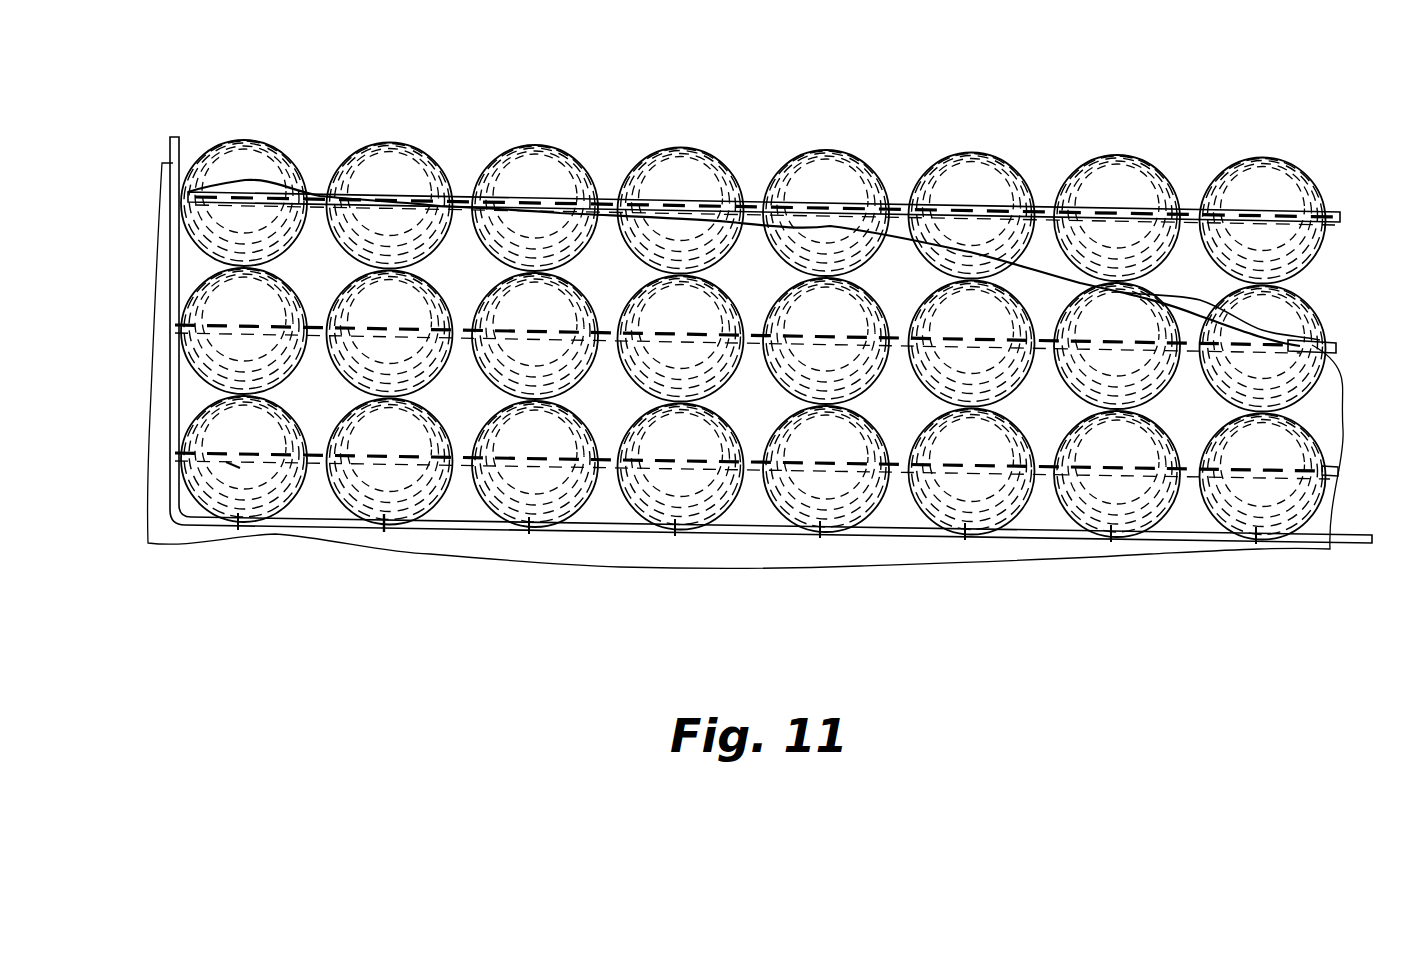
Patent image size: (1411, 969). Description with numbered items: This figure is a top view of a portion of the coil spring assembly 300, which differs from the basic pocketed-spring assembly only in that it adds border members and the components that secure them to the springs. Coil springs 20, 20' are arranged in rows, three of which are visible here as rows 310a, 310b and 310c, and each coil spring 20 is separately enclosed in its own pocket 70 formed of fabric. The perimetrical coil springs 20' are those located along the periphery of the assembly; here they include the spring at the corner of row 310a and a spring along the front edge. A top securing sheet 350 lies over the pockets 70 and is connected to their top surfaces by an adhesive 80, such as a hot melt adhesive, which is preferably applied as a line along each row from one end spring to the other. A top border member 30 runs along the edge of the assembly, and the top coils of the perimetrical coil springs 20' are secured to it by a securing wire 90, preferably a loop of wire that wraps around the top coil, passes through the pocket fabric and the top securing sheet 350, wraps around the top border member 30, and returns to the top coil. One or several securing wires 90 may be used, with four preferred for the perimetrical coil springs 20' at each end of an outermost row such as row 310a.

The coil spring assembly 300 is at (834, 88).
The coil spring 20 is at (753, 314).
The perimetrical coil spring 20' is at (389, 344).
The pocket 70 is at (258, 141).
The top border member 30 is at (328, 522).
The securing wire 90 is at (390, 524).
The adhesive 80 is at (232, 466).
The top securing sheet 350 is at (276, 536).
The row 310a is at (164, 452).
The row 310b is at (1343, 343).
The row 310c is at (153, 197).